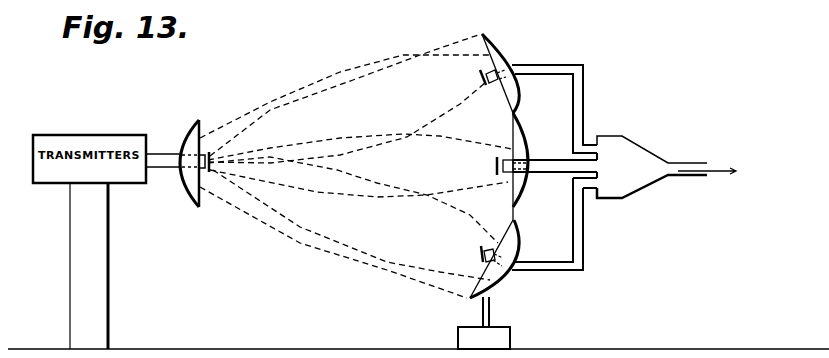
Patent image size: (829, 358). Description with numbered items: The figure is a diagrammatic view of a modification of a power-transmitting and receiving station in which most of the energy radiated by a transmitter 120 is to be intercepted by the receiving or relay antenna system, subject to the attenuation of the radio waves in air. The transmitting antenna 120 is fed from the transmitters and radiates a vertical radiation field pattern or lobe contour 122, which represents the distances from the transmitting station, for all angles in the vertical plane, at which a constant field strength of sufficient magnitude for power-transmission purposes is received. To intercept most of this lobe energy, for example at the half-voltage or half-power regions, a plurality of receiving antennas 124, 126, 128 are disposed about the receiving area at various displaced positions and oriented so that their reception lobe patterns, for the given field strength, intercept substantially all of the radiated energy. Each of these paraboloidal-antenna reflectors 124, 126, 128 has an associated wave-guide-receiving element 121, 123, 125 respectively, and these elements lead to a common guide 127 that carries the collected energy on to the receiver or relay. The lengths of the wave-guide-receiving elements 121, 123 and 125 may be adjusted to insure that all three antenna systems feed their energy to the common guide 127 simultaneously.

The transmitter 120 is at (185, 128).
The wave-guide-receiving element 121 is at (583, 82).
The lobe contour 122 is at (330, 80).
The wave-guide-receiving element 123 is at (545, 168).
The receiving antenna 124 is at (493, 46).
The wave-guide-receiving element 125 is at (547, 267).
The receiving antenna 126 is at (518, 146).
The common guide 127 is at (643, 154).
The receiving antenna 128 is at (511, 243).